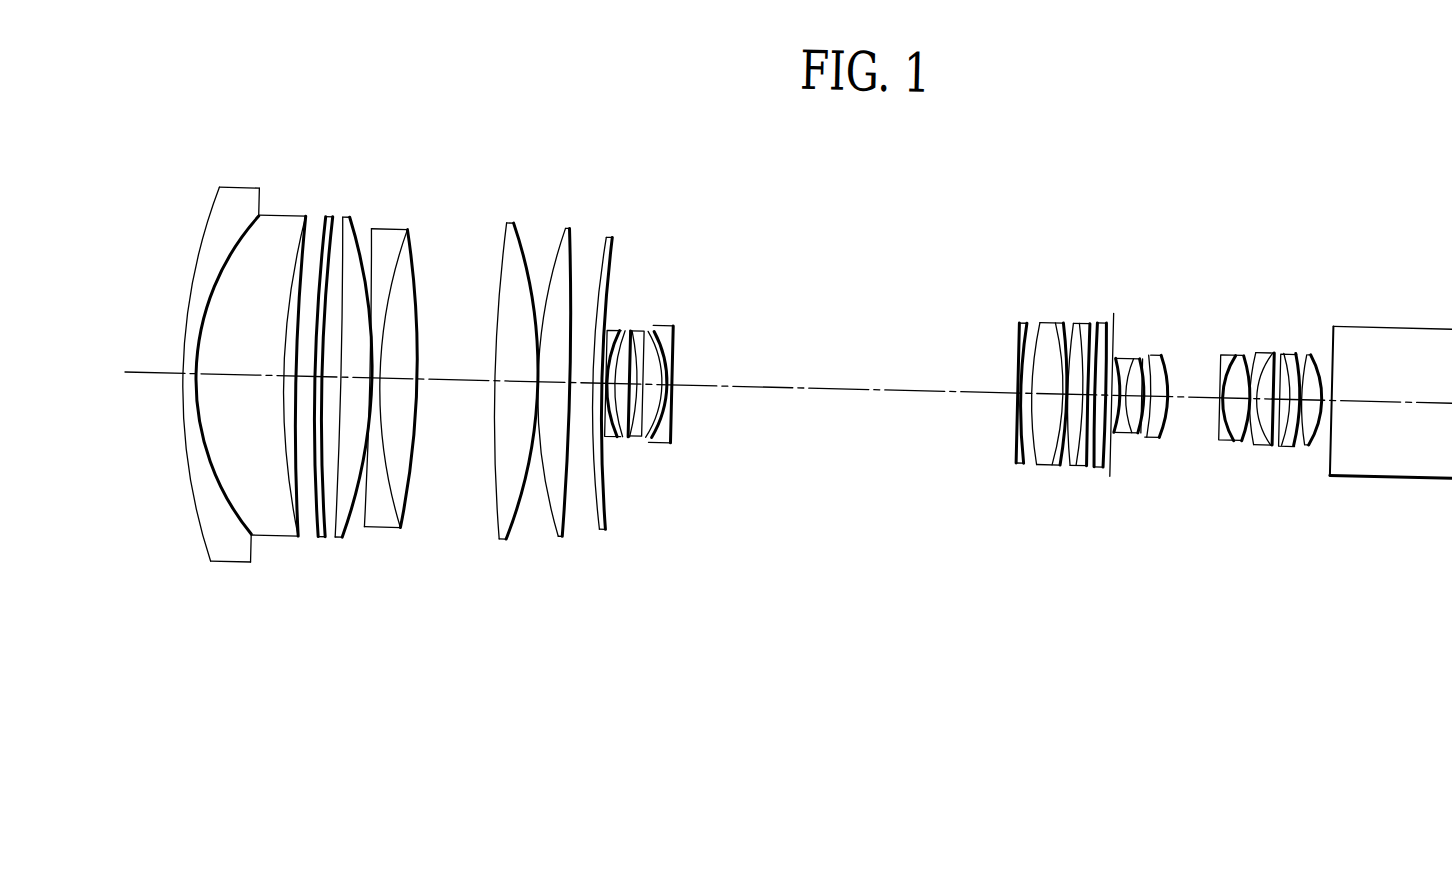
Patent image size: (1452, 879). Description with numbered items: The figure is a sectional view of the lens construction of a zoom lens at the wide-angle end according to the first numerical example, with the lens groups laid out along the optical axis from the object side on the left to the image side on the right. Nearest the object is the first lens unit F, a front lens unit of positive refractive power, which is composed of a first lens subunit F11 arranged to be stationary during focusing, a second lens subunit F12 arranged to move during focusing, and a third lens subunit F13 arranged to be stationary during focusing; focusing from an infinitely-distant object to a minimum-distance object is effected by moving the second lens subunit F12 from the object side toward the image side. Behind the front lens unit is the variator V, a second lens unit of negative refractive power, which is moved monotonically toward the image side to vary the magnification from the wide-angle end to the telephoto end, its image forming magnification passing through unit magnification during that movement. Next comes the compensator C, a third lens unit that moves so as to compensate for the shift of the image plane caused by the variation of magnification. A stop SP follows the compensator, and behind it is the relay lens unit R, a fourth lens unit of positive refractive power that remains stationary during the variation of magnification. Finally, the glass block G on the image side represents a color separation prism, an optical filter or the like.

The first lens unit F is at (398, 355).
The first lens subunit F11 is at (192, 578).
The second lens subunit F12 is at (338, 576).
The third lens subunit F13 is at (490, 577).
The variator V is at (680, 299).
The compensator C is at (1009, 271).
The stop SP is at (1111, 286).
The relay lens unit R is at (1125, 271).
The color separation prism G is at (1335, 272).